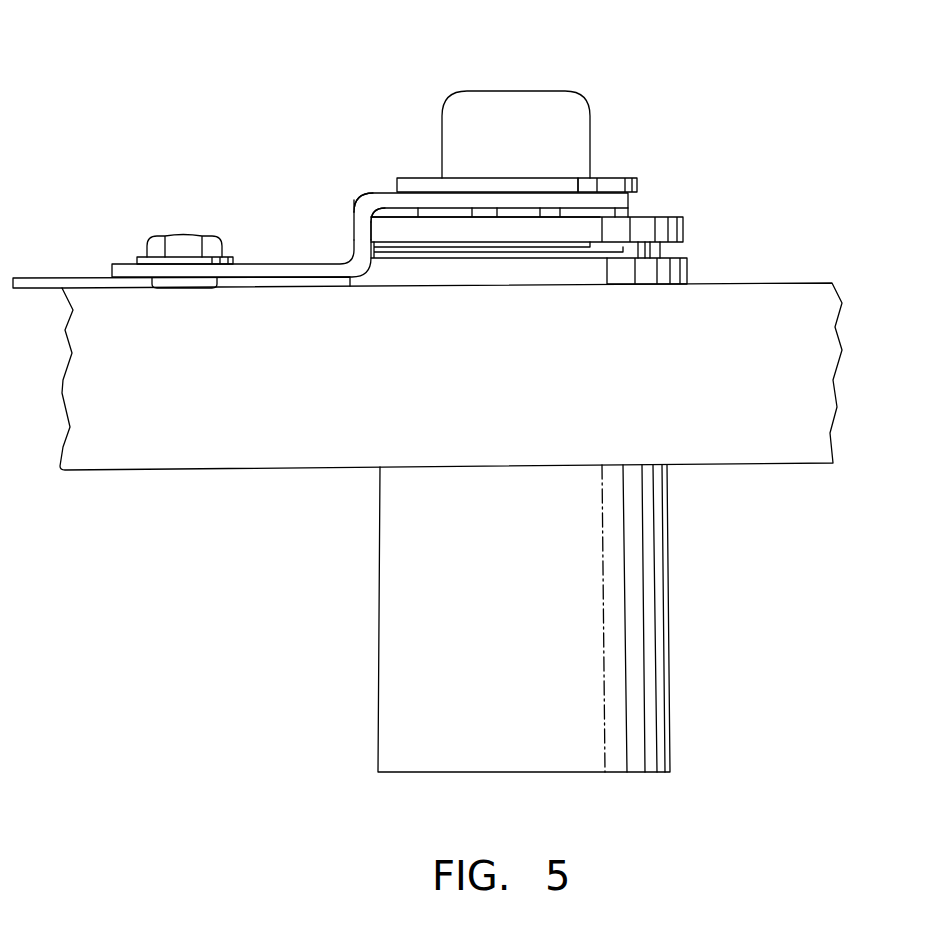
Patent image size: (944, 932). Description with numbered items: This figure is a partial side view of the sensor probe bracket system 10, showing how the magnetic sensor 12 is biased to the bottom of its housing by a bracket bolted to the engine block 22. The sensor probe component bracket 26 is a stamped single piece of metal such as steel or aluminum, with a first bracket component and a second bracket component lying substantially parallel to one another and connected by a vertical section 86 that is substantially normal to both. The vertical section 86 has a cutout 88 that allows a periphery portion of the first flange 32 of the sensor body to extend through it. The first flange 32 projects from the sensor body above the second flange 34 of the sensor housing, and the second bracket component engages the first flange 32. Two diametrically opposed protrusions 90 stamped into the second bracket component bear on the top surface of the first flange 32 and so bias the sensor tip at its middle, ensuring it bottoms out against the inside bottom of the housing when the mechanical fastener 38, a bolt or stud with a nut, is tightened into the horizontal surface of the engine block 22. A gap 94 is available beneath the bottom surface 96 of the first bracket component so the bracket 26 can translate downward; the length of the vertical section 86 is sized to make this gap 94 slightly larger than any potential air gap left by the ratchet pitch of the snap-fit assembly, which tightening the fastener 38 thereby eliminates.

The sensor probe bracket system 10 is at (212, 139).
The magnetic sensor 12 is at (468, 90).
The engine block 22 is at (808, 283).
The sensor probe component bracket 26 is at (296, 219).
The first flange 32 is at (668, 214).
The second flange 34 is at (688, 271).
The mechanical fastener 38 is at (163, 237).
The vertical section 86 is at (358, 195).
The cutout 88 is at (337, 213).
The protrusions 90 is at (537, 213).
The gap 94 is at (18, 330).
The bottom surface 96 is at (297, 280).